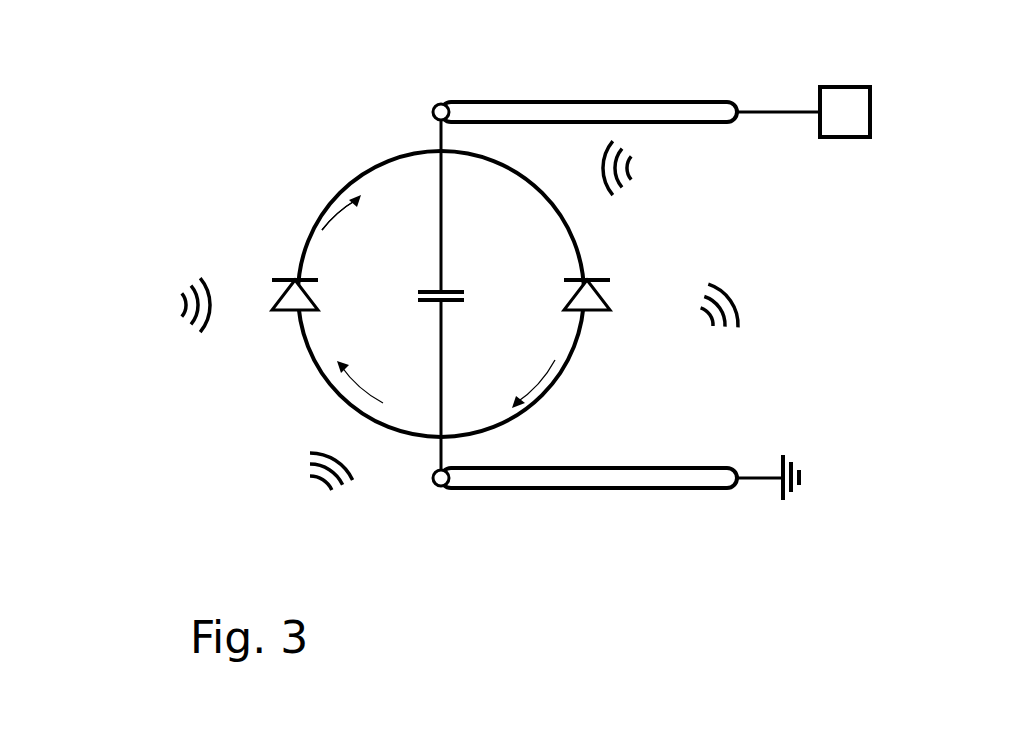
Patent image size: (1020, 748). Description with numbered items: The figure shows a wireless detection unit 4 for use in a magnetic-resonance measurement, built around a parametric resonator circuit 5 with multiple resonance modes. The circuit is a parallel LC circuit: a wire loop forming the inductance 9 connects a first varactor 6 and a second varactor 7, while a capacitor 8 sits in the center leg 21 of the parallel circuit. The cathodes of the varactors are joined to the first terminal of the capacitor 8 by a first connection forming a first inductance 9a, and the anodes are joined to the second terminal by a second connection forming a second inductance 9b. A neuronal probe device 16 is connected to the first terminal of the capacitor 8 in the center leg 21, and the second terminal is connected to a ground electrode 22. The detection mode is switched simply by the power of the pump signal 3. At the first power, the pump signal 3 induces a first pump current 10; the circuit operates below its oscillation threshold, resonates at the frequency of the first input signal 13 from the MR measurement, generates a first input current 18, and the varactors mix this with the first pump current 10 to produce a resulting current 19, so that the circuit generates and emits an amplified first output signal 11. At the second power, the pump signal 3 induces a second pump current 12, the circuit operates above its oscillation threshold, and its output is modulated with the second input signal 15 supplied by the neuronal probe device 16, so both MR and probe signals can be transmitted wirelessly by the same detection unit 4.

The pump signal 3 is at (160, 268).
The wireless detection unit 4 is at (311, 114).
The parametric resonator circuit 5 is at (321, 90).
The first varactor 6 is at (276, 310).
The second varactor 7 is at (610, 306).
The capacitor 8 is at (455, 291).
The inductance 9 is at (393, 157).
The first inductance 9a is at (340, 163).
The second inductance 9b is at (476, 452).
The first pump current 10 is at (320, 226).
The first output signal 11 is at (765, 273).
The second pump current 12 is at (339, 215).
The first input signal 13 is at (347, 498).
The second input signal 15 is at (630, 166).
The neuronal probe device 16 is at (848, 86).
The first input current 18 is at (343, 394).
The resulting current 19 is at (550, 372).
The center leg 21 is at (447, 183).
The ground electrode 22 is at (738, 489).